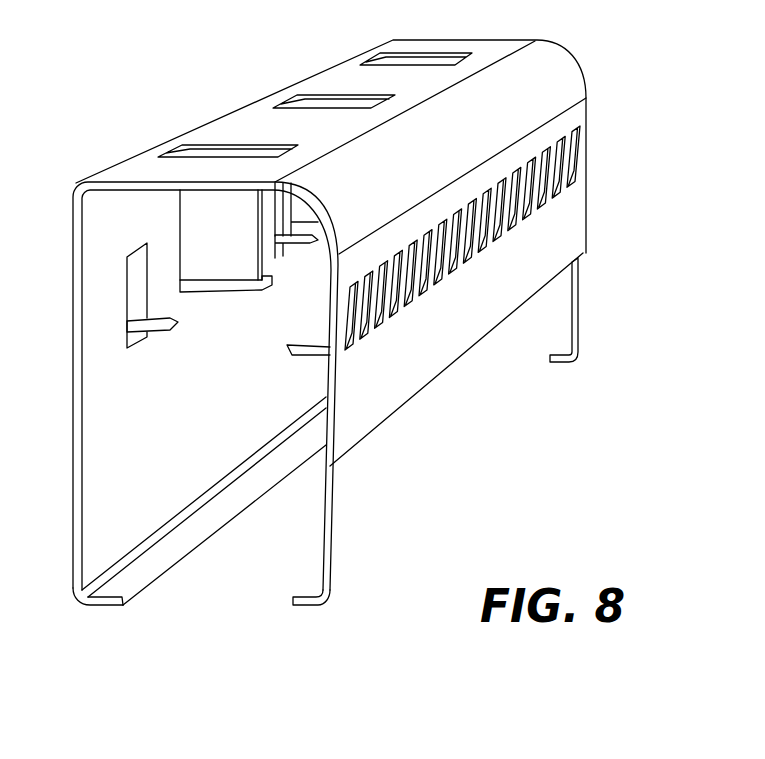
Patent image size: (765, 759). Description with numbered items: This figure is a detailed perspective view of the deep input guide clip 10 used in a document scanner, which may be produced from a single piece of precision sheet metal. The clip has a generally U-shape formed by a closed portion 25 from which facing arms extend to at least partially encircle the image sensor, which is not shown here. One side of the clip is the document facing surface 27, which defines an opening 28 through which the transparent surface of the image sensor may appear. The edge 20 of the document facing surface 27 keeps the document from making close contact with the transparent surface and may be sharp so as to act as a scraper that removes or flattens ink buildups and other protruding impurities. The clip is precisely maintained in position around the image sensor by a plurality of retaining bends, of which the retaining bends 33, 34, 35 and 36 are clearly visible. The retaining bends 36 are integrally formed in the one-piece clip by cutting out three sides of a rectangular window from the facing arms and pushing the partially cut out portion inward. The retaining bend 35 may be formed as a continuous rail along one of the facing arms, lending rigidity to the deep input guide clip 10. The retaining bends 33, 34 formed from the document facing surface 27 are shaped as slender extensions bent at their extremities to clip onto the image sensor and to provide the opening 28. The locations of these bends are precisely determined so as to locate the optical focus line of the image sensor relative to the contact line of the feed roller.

The deep input guide clip 10 is at (231, 86).
The edge 20 is at (452, 360).
The closed portion 25 is at (155, 172).
The document facing surface 27 is at (552, 240).
The opening 28 is at (533, 334).
The retaining bend 33 is at (320, 605).
The retaining bend 34 is at (560, 362).
The retaining bend 35 is at (145, 583).
The retaining bends 36 is at (313, 242).